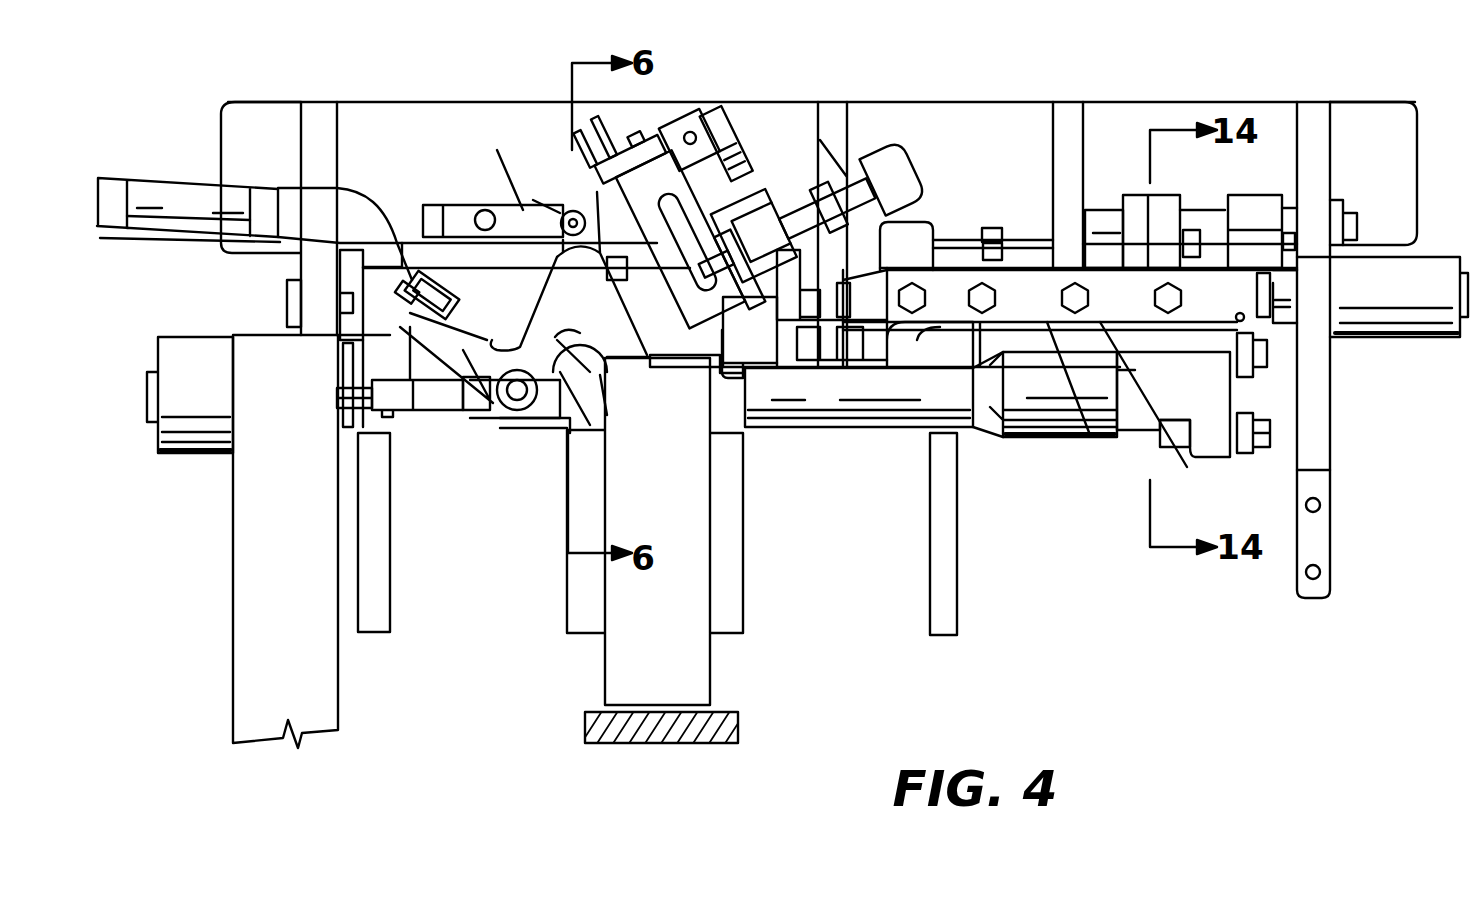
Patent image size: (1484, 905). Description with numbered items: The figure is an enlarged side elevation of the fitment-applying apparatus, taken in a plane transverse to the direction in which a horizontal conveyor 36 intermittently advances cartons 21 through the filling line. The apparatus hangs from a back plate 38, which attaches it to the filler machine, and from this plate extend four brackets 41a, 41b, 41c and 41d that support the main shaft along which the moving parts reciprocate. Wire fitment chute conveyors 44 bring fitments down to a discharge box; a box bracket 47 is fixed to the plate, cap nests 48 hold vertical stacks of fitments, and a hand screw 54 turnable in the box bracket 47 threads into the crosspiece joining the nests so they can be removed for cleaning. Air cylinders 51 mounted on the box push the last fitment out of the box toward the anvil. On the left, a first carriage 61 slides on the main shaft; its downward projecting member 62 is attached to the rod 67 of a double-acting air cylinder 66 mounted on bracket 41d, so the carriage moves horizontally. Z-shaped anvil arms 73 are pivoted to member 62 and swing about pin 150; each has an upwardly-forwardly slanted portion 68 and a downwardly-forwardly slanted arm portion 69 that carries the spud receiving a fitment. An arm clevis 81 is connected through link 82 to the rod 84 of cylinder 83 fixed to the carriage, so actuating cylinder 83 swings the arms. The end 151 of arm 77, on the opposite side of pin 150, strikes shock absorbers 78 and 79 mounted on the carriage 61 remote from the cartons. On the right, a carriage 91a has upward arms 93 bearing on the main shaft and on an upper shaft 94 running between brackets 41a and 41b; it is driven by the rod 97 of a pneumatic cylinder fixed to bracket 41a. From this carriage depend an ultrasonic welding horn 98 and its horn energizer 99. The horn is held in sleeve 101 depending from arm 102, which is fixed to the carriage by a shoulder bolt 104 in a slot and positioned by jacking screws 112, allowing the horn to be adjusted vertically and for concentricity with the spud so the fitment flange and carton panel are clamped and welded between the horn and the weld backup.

The carton 21 is at (646, 508).
The horizontal conveyor 36 is at (735, 735).
The back plate 38 is at (960, 115).
The bracket 41a is at (1313, 137).
The bracket 41b is at (1067, 120).
The bracket 41c is at (832, 130).
The bracket 41d is at (337, 140).
The wire fitment chute conveyors 44 is at (598, 118).
The box bracket 47 is at (667, 153).
The cap nests 48 is at (607, 255).
The air cylinders 51 is at (820, 140).
The hand screw 54 is at (723, 137).
The first carriage 61 is at (477, 287).
The downward projecting member 62 is at (500, 327).
The double-acting horizontal air cylinder 66 is at (203, 397).
The rod 67 is at (367, 430).
The slanted portion 68 is at (578, 350).
The arm portion 69 is at (618, 323).
The Z-shaped anvil arms 73 is at (600, 400).
The arm 77 is at (478, 425).
The shock absorber 78 is at (440, 282).
The shock absorber 79 is at (400, 425).
The arm clevis 81 is at (542, 217).
The link 82 is at (497, 150).
The cylinder 83 is at (177, 198).
The rod 84 is at (400, 213).
The carriage 91a is at (1097, 445).
The upward arms 93 is at (913, 230).
The upper shaft 94 is at (1100, 217).
The rod 97 is at (1283, 300).
The ultrasonic welding horn 98 is at (823, 405).
The horn energizer 99 is at (1273, 400).
The sleeve 101 is at (1193, 413).
The arm 102 is at (1023, 353).
The shoulder bolt 104 is at (923, 335).
The jacking screws 112 is at (990, 228).
The pin 150 is at (525, 428).
The end 151 is at (367, 355).